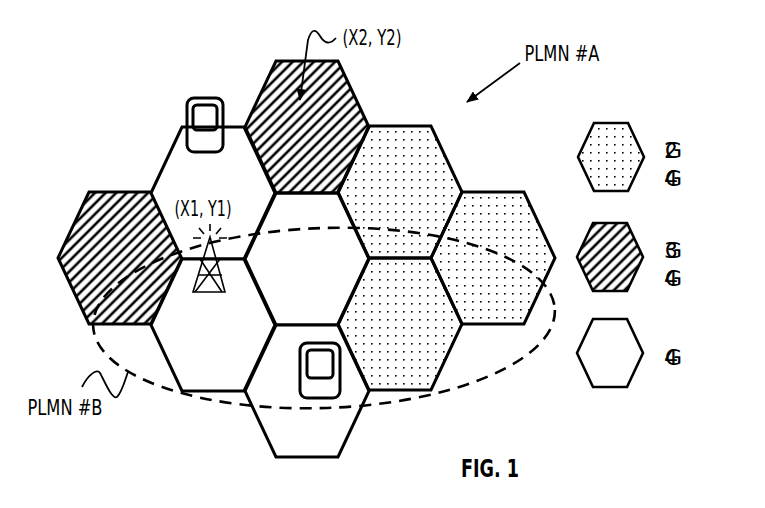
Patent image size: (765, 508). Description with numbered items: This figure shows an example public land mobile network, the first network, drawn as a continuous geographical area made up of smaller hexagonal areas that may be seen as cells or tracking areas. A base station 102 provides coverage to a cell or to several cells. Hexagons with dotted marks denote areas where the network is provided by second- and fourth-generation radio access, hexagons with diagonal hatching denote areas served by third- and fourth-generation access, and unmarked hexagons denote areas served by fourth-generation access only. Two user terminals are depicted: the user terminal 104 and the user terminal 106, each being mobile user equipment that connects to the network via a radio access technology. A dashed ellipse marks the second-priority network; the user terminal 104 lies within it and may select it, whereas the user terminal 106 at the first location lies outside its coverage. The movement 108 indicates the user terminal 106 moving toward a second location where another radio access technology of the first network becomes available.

The base station 102 is at (205, 296).
The user terminal 104 is at (320, 398).
The user terminal 106 is at (200, 97).
The movement of the user terminal 108 is at (233, 112).